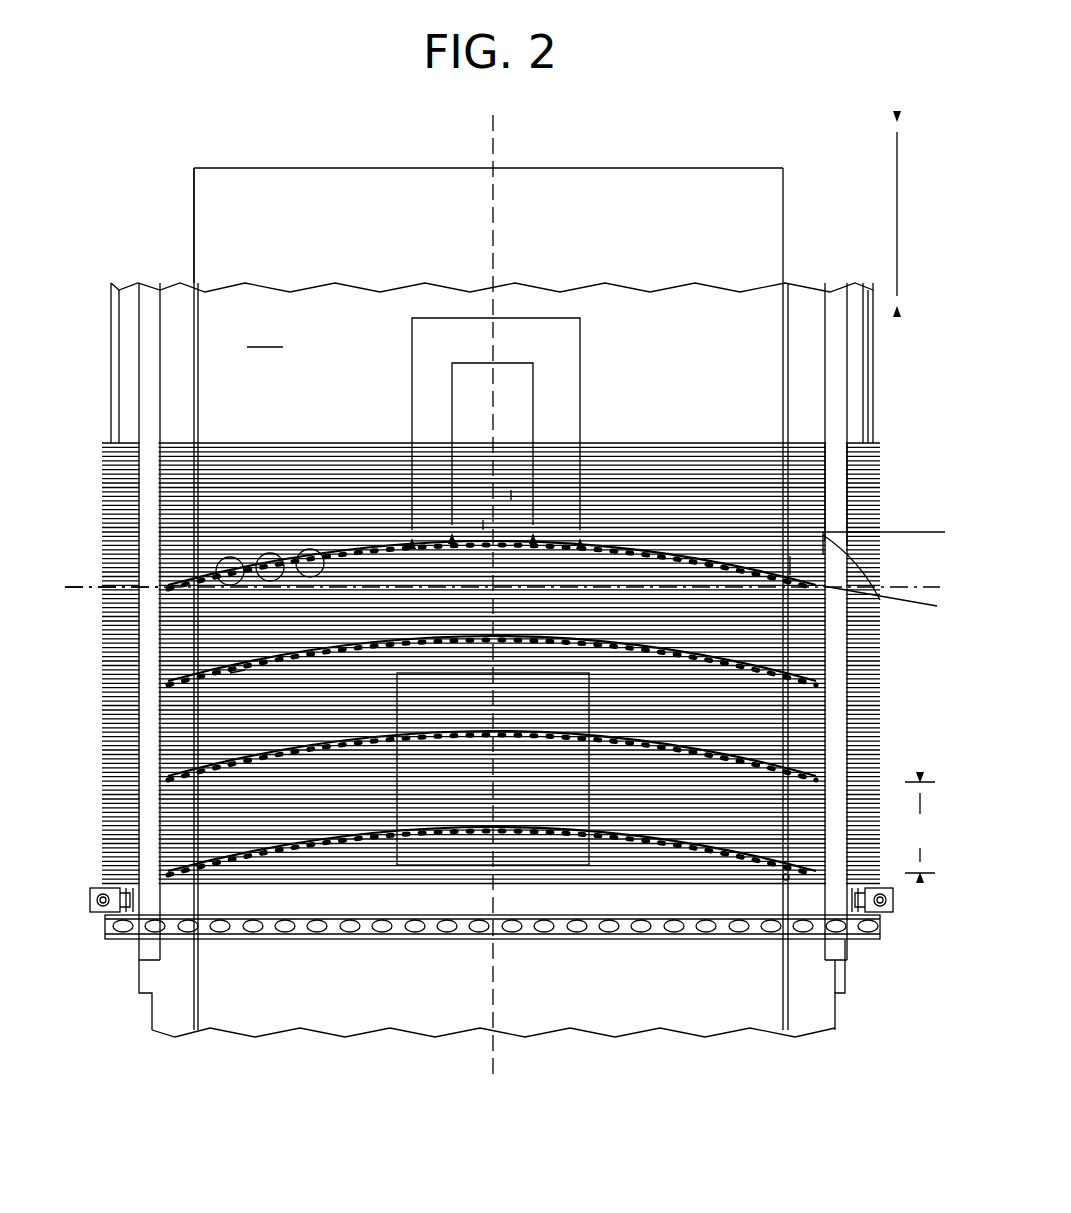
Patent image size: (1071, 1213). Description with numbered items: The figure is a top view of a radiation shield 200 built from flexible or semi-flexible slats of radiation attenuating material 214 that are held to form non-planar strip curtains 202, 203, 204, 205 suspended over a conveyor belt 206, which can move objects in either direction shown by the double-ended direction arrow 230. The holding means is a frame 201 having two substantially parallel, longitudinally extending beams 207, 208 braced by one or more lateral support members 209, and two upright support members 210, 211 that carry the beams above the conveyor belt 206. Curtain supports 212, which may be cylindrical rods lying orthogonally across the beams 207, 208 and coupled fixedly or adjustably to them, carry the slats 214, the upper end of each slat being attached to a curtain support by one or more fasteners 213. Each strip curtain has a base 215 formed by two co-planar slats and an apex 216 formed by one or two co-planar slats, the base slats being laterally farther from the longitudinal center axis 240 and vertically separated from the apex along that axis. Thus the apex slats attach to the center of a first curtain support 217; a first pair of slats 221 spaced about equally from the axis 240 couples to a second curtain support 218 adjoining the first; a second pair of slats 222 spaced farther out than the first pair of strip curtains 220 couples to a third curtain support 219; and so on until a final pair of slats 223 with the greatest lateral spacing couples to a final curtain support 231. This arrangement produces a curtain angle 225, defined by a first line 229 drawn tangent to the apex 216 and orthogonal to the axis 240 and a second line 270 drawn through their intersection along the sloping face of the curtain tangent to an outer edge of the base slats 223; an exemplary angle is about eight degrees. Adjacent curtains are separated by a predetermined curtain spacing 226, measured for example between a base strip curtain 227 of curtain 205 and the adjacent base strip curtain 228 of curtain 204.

The radiation shield 200 is at (778, 148).
The frame 201 is at (120, 955).
The non-planar strip curtain 202 is at (832, 601).
The non-planar strip curtain 203 is at (820, 682).
The non-planar strip curtain 204 is at (820, 722).
The non-planar strip curtain 205 is at (835, 940).
The conveyor belt 206 is at (265, 333).
The longitudinally extending beam 207 is at (170, 285).
The longitudinally extending beam 208 is at (805, 285).
The lateral support member 209 is at (760, 930).
The upright support member 210 is at (95, 888).
The upright support member 211 is at (893, 905).
The curtain support 212 is at (668, 420).
The fastener 213 is at (305, 577).
The slat of radiation attenuating material 214 is at (372, 558).
The base 215 is at (86, 582).
The apex 216 is at (511, 495).
The first curtain support 217 is at (826, 538).
The second curtain support 218 is at (824, 545).
The third curtain support 219 is at (823, 552).
The first pair of strip curtains 220 is at (483, 528).
The first pair of slats 221 is at (452, 363).
The second pair of slats 222 is at (412, 318).
The final pair of slats 223 is at (640, 168).
The curtain angle 225 is at (905, 602).
The curtain spacing 226 is at (918, 827).
The base strip curtain 227 is at (782, 882).
The base strip curtain 228 is at (823, 764).
The first line 229 is at (937, 555).
The double-ended direction arrow 230 is at (897, 215).
The final curtain support 231 is at (800, 572).
The longitudinal center axis 240 is at (500, 1065).
The second line 270 is at (928, 608).